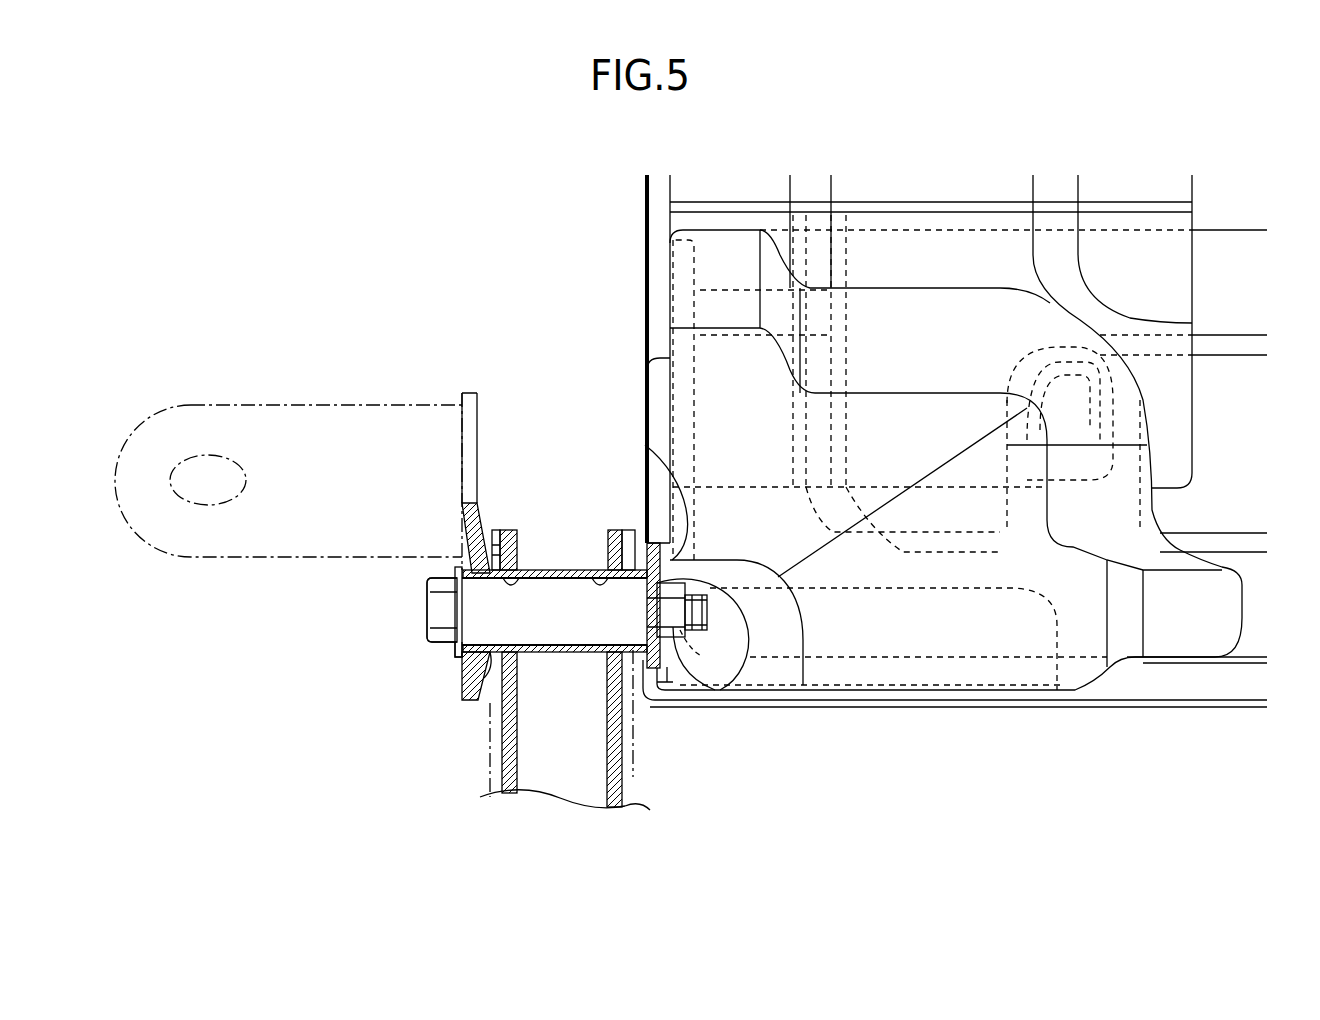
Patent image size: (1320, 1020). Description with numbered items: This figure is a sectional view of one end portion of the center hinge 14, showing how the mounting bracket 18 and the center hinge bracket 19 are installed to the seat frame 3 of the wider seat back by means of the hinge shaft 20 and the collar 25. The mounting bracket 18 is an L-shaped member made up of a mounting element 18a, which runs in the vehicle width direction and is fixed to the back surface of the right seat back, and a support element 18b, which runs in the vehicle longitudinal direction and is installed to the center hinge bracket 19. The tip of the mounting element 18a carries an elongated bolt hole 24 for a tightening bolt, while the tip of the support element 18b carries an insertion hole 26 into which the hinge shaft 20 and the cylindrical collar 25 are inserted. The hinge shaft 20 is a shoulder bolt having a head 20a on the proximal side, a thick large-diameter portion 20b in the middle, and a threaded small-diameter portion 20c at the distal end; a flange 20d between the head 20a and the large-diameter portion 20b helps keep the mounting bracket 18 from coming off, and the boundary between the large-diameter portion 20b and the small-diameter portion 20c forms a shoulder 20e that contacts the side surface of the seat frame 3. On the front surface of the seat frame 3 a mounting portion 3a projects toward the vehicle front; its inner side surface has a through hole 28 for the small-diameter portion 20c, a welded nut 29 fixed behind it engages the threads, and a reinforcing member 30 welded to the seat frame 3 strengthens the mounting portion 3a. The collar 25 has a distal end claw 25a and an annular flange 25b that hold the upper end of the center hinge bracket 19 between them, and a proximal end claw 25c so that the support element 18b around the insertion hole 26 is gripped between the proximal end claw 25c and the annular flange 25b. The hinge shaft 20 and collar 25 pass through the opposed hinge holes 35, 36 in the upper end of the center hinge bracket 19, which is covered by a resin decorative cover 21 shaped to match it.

The seat frame 3 is at (1200, 685).
The mounting portion 3a is at (643, 705).
The center hinge 14 is at (558, 381).
The mounting bracket 18 is at (430, 401).
The mounting element 18a is at (200, 548).
The support element 18b is at (480, 508).
The center hinge bracket 19 is at (497, 776).
The hinge shaft 20 is at (419, 628).
The head 20a is at (430, 605).
The large-diameter portion 20b is at (565, 630).
The small-diameter portion 20c is at (747, 627).
The flange 20d is at (453, 652).
The shoulder 20e is at (660, 463).
The decorative cover 21 is at (640, 790).
The bolt hole 24 is at (213, 457).
The collar 25 is at (556, 566).
The distal end claw 25a is at (633, 530).
The annular flange 25b is at (472, 703).
The proximal end claw 25c is at (466, 660).
The insertion hole 26 is at (456, 572).
The through hole 28 is at (700, 582).
The welded nut 29 is at (675, 630).
The reinforcing member 30 is at (793, 635).
The hinge hole 35 is at (592, 567).
The hinge hole 36 is at (528, 567).